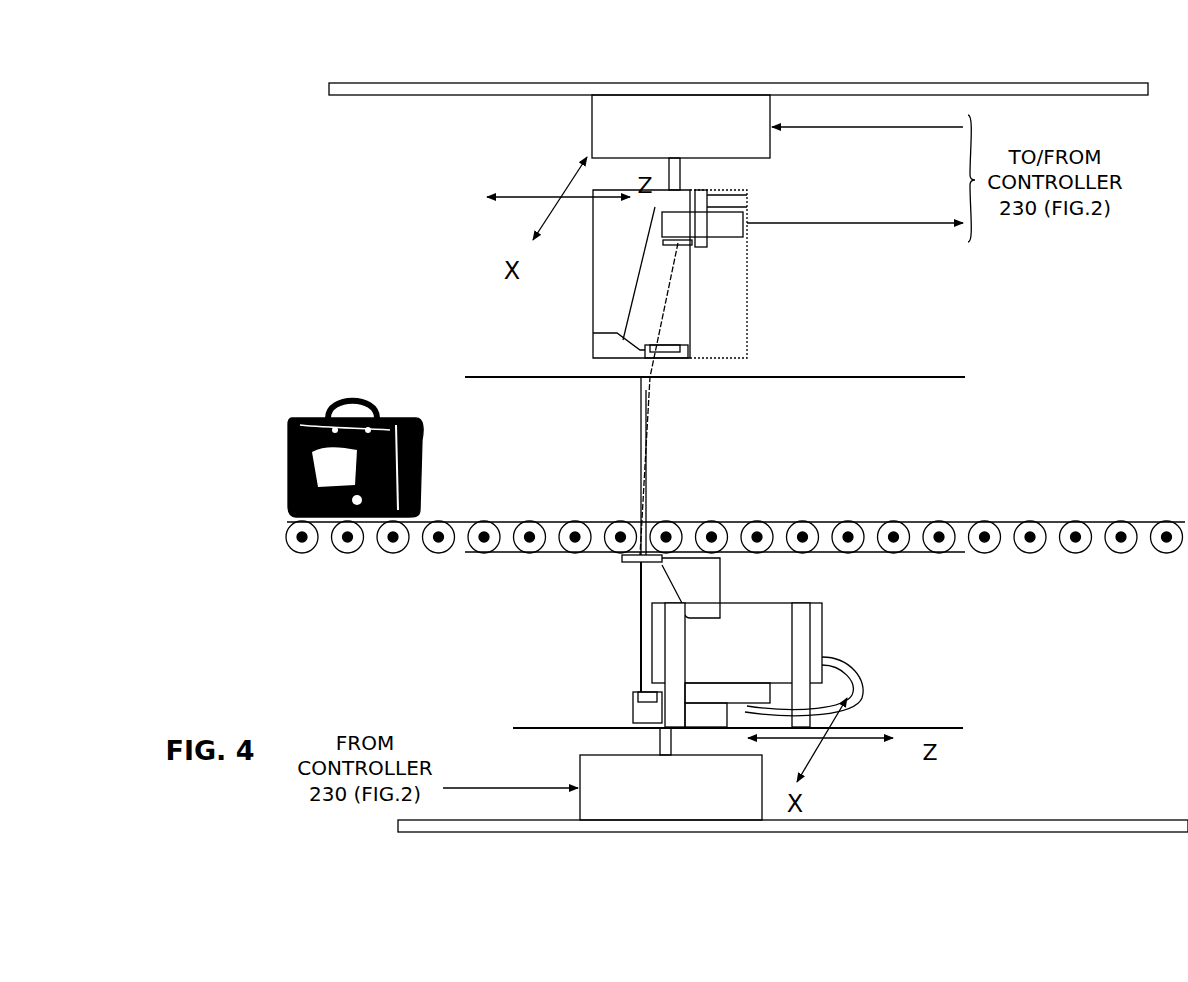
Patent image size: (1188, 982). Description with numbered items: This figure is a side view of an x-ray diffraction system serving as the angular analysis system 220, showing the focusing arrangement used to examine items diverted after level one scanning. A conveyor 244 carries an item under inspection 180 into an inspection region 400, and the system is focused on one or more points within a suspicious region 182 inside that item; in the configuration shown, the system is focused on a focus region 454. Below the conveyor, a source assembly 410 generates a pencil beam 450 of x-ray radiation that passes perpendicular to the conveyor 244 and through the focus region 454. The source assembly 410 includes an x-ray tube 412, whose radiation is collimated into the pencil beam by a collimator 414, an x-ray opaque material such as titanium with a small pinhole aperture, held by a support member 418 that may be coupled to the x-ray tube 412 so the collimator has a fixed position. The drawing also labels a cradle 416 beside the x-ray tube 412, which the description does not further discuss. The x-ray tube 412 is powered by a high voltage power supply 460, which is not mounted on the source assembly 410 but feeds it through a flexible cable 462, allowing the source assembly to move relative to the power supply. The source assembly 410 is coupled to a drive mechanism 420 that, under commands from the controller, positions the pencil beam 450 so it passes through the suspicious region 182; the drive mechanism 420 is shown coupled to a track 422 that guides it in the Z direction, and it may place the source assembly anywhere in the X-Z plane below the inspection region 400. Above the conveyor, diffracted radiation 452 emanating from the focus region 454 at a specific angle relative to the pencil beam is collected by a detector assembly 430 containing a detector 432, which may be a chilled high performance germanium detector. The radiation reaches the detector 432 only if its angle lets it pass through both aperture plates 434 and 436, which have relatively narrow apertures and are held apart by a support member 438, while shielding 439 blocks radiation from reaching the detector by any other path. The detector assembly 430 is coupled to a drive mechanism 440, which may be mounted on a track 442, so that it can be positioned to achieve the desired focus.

The track 442 is at (830, 95).
The drive mechanism 440 is at (770, 147).
The detector 432 is at (745, 222).
The aperture plate 436 is at (680, 245).
The aperture plate 434 is at (672, 345).
The support member 438 is at (592, 265).
The shielding 439 is at (750, 258).
The detector assembly 430 is at (712, 273).
The inspection region 400 is at (877, 436).
The item under inspection 180 is at (320, 408).
The suspicious region 182 is at (290, 500).
The focus region 454 is at (637, 427).
The diffracted radiation 452 is at (650, 382).
The pencil beam 450 is at (642, 512).
The conveyor 244 is at (1105, 522).
The collimator 414 is at (625, 560).
The support member 418 is at (722, 592).
The high voltage power supply 460 is at (772, 618).
The flexible cable 462 is at (847, 660).
The source assembly 410 is at (706, 655).
The x-ray tube 412 is at (635, 705).
The cradle 416 is at (738, 695).
The drive mechanism 420 is at (580, 805).
The track 422 is at (558, 832).
The angular analysis system 220 is at (925, 855).